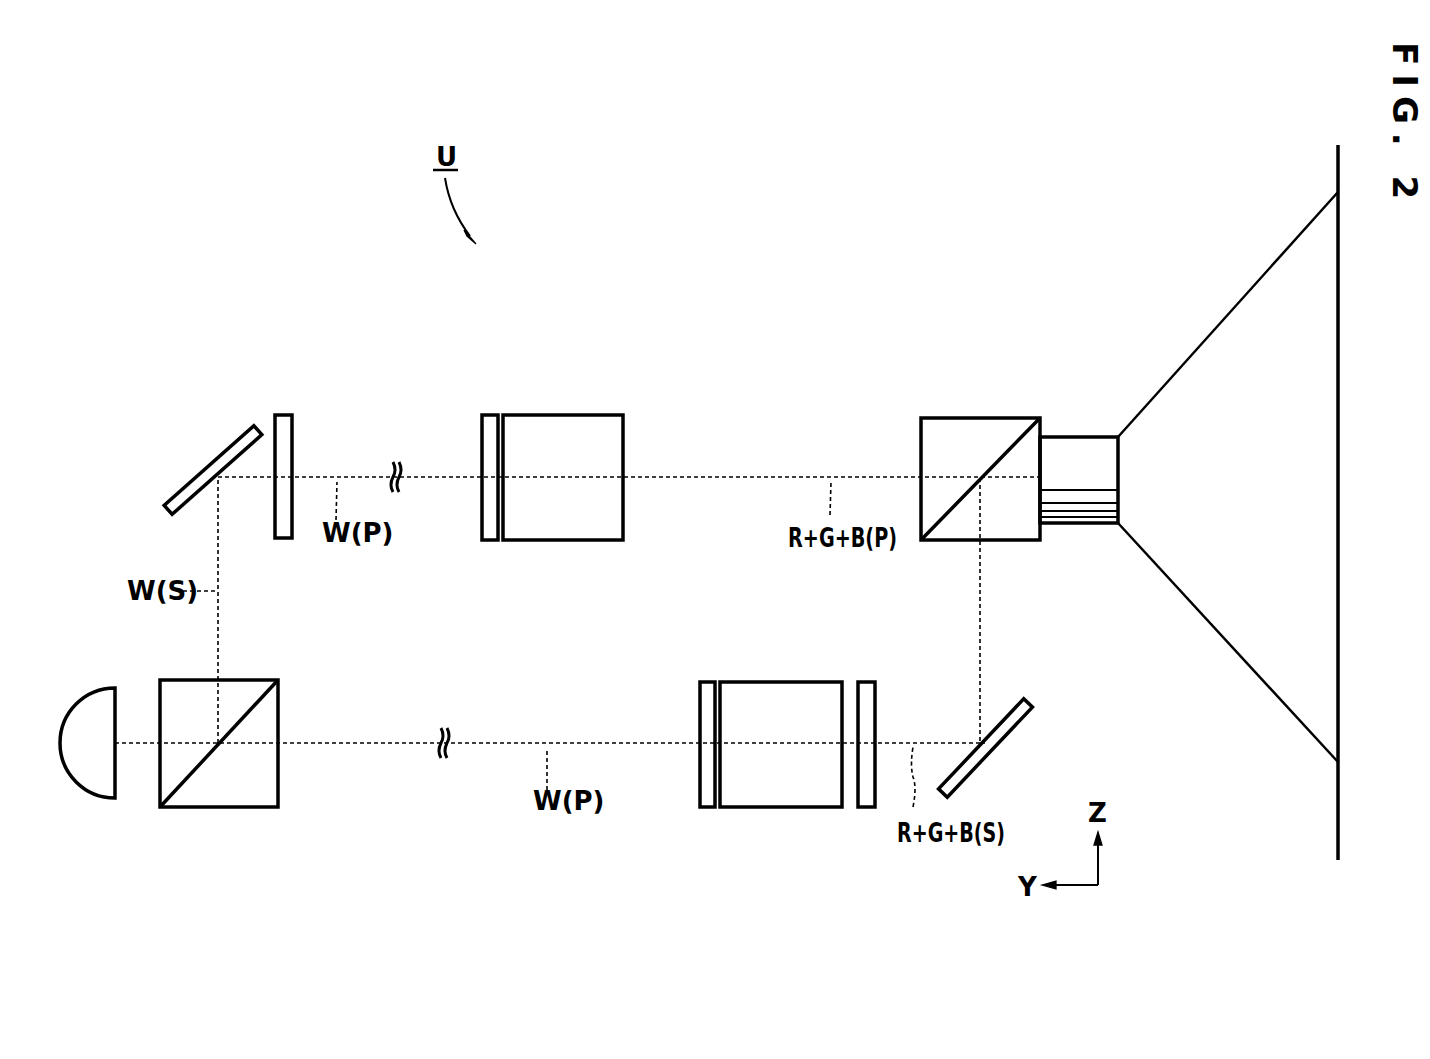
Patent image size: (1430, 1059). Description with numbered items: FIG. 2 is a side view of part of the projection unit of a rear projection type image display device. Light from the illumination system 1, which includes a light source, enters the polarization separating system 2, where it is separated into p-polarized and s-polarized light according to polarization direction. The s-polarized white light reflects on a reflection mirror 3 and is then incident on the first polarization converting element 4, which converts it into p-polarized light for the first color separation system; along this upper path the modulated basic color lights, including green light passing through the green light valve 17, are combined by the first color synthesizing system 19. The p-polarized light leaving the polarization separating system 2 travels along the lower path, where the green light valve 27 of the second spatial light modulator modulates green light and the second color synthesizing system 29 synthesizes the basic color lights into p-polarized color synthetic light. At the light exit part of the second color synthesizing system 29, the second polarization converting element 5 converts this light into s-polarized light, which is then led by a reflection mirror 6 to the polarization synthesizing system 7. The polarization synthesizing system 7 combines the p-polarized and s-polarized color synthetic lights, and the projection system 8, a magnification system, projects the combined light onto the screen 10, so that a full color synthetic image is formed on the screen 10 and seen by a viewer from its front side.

The illumination system 1 is at (98, 696).
The polarization separating system 2 is at (235, 796).
The reflection mirror 3 is at (235, 438).
The first polarization converting element 4 is at (285, 415).
The green light valve 17 is at (490, 415).
The first color synthesizing system 19 is at (587, 415).
The polarization synthesizing system 7 is at (962, 418).
The projection system 8 is at (1082, 437).
The screen 10 is at (1336, 172).
The green light valve 27 is at (706, 808).
The second color synthesizing system 29 is at (805, 808).
The second polarization converting element 5 is at (866, 808).
The reflection mirror 6 is at (1006, 744).